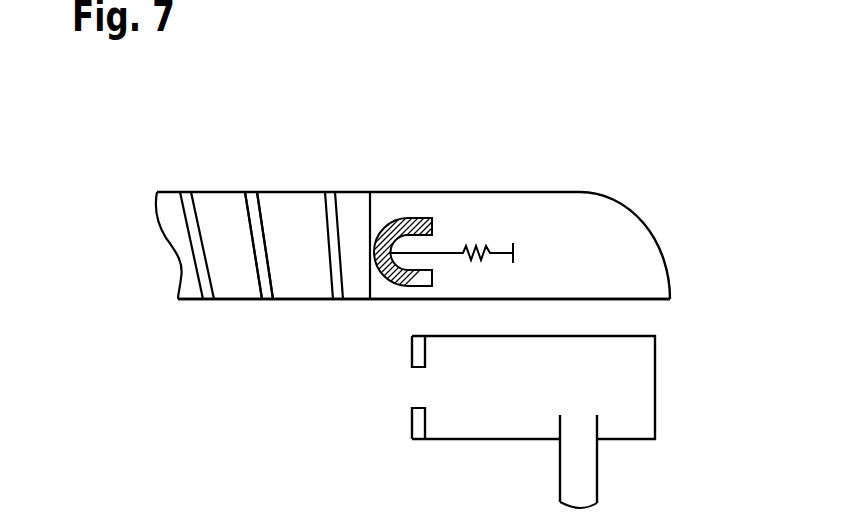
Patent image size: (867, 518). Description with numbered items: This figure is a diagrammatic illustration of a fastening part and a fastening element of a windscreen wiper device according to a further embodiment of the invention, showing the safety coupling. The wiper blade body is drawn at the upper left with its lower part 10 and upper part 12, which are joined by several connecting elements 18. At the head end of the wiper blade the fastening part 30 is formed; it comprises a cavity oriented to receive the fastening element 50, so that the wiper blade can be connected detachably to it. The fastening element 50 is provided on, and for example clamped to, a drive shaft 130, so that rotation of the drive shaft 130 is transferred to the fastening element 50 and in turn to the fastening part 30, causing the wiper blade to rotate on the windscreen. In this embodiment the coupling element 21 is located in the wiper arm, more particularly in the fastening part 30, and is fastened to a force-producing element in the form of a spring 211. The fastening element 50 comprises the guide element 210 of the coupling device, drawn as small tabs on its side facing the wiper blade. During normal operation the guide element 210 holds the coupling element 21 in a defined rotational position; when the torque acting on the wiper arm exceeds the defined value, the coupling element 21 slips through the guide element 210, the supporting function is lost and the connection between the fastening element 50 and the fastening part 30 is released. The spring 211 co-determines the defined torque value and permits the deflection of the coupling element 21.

The lower part 10 is at (218, 193).
The upper part 12 is at (298, 302).
The connecting elements 18 is at (262, 223).
The coupling element 21 is at (418, 217).
The spring 211 is at (483, 251).
The fastening part 30 is at (608, 195).
The fastening element 50 is at (655, 383).
The guide element 210 is at (414, 427).
The drive shaft 130 is at (587, 487).